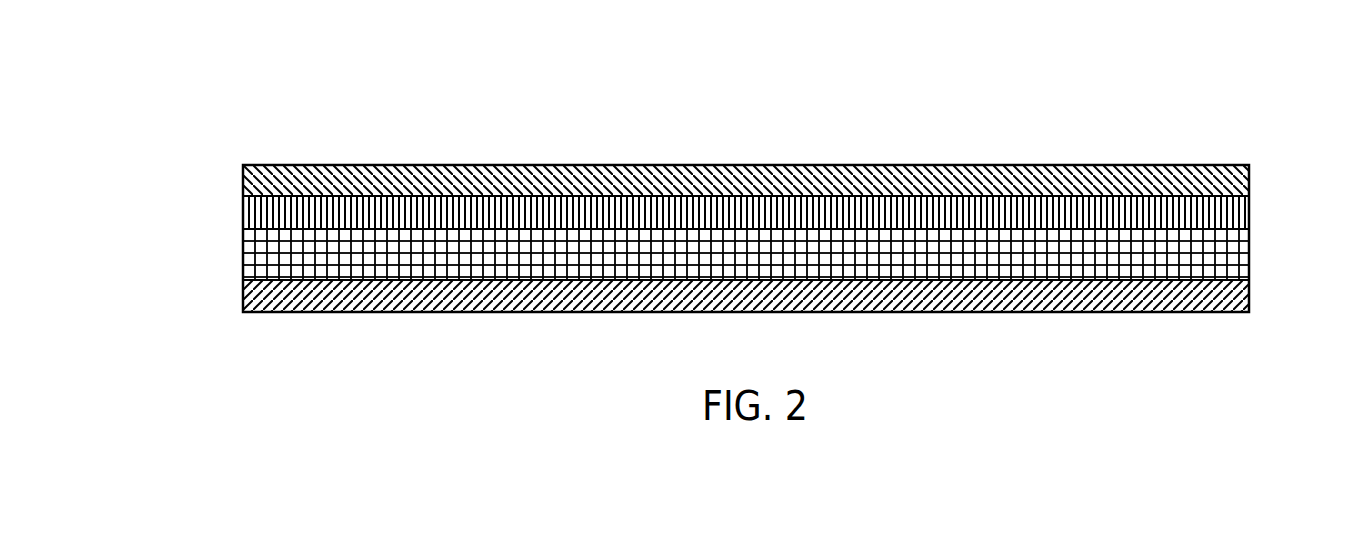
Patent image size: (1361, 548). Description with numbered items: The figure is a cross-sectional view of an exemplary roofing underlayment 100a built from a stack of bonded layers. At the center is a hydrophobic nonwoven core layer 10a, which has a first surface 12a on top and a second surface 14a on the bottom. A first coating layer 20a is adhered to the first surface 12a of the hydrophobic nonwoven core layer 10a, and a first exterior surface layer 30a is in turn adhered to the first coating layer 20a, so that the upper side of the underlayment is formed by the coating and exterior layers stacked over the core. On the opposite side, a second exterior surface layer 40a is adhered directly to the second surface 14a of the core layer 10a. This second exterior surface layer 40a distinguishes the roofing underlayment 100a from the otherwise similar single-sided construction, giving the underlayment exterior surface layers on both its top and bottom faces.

The roofing underlayment 100a is at (1218, 98).
The hydrophobic nonwoven core layer 10a is at (1249, 250).
The first surface 12a is at (273, 225).
The second surface 14a is at (1047, 277).
The first coating layer 20a is at (1249, 212).
The first exterior surface layer 30a is at (267, 166).
The second exterior surface layer 40a is at (286, 312).